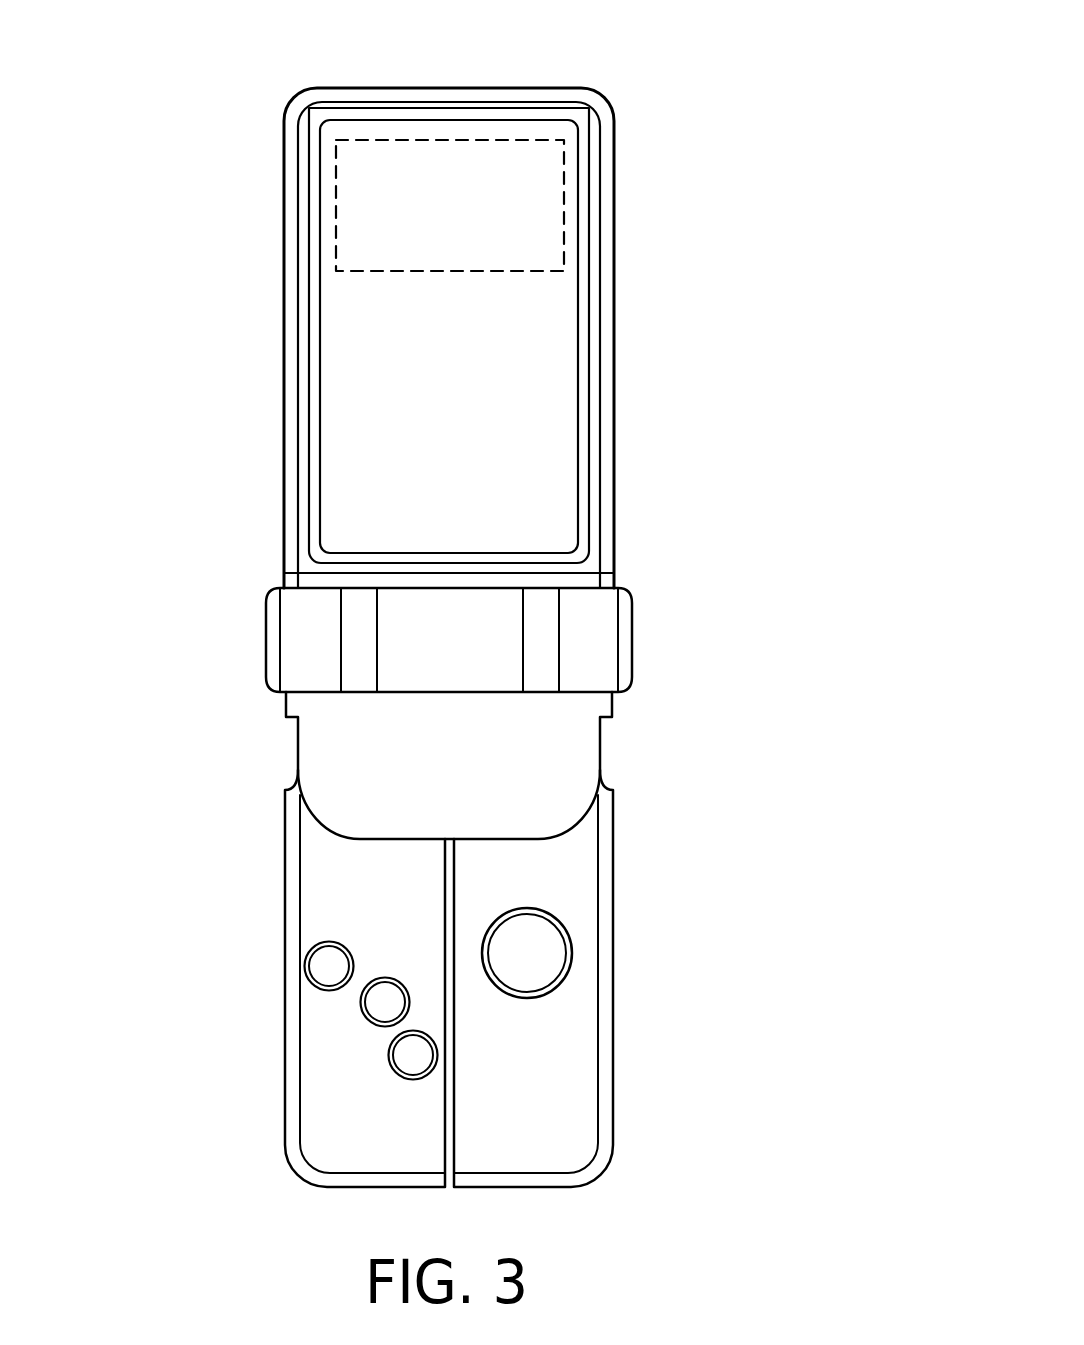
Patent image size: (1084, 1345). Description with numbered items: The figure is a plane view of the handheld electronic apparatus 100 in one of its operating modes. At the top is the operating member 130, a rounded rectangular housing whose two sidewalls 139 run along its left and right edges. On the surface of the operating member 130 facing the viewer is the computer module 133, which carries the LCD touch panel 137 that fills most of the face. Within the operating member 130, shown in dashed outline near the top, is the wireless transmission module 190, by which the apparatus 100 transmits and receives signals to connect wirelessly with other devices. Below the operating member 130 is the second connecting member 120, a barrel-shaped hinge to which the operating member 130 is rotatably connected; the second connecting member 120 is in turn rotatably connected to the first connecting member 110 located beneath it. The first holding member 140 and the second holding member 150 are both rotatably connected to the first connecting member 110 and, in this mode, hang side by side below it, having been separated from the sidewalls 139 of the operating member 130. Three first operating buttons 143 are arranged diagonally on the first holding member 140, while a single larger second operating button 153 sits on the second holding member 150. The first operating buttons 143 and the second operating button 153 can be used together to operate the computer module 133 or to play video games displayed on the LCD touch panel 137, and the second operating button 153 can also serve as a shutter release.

The handheld electronic apparatus 100 is at (168, 50).
The first connecting member 110 is at (297, 745).
The second connecting member 120 is at (267, 636).
The operating member 130 is at (542, 88).
The computer module 133 is at (323, 378).
The LCD touch panel 137 is at (327, 473).
The sidewalls 139 is at (283, 283).
The first holding member 140 is at (284, 877).
The first operating buttons 143 is at (319, 966).
The second holding member 150 is at (614, 877).
The second operating button 153 is at (548, 952).
The wireless transmission module 190 is at (353, 205).